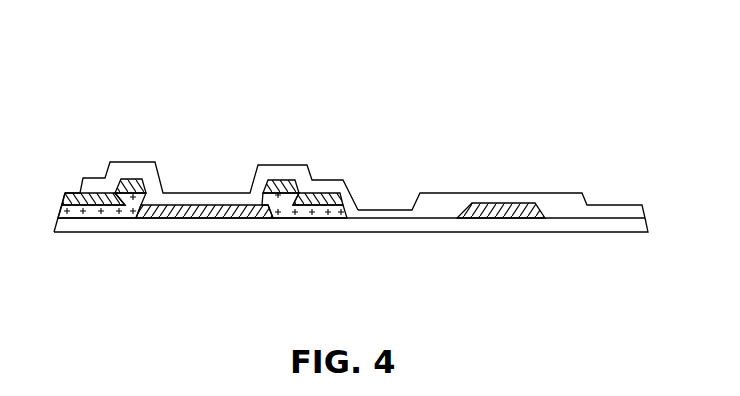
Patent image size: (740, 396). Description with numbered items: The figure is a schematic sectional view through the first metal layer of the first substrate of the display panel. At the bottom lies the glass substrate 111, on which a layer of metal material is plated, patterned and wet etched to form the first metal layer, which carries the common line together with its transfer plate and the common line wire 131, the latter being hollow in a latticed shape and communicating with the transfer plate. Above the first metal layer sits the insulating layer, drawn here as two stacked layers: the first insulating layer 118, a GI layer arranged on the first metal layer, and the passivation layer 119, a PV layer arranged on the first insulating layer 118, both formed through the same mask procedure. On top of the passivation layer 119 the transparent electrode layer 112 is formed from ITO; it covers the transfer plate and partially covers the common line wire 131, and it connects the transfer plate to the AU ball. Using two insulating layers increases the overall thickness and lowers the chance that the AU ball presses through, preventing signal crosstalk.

The glass substrate 111 is at (370, 223).
The transparent electrode layer 112 is at (416, 200).
The first insulating layer 118 is at (107, 214).
The passivation layer 119 is at (103, 188).
The common line wire 131 is at (508, 208).